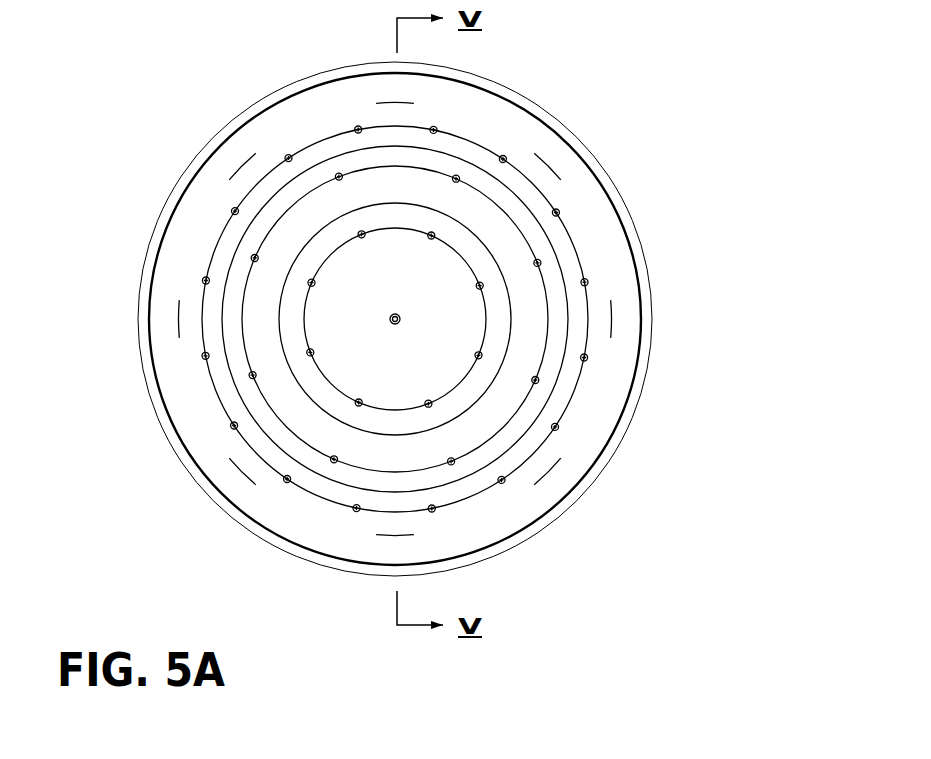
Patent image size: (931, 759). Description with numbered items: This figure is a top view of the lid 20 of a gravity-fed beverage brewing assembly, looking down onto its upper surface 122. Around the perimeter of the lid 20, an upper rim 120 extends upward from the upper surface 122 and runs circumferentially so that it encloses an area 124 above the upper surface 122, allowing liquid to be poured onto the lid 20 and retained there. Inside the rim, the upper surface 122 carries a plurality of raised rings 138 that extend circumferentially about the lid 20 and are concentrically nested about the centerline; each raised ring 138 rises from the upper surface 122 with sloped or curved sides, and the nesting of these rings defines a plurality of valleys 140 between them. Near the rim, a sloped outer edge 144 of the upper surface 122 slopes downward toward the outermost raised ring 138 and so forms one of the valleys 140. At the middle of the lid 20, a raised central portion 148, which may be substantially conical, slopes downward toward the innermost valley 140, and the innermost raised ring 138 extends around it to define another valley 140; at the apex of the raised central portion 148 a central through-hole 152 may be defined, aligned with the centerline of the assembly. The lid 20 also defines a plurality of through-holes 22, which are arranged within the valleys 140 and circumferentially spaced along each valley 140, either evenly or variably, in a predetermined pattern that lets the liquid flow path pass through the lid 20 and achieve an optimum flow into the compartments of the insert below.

The lid 20 is at (649, 125).
The through-holes 22 is at (481, 364).
The upper rim 120 is at (643, 295).
The upper surface 122 is at (594, 388).
The area 124 is at (271, 508).
The raised rings 138 is at (560, 277).
The valleys 140 is at (405, 226).
The sloped outer edge 144 is at (572, 452).
The raised central portion 148 is at (345, 330).
The central through-hole 152 is at (387, 328).